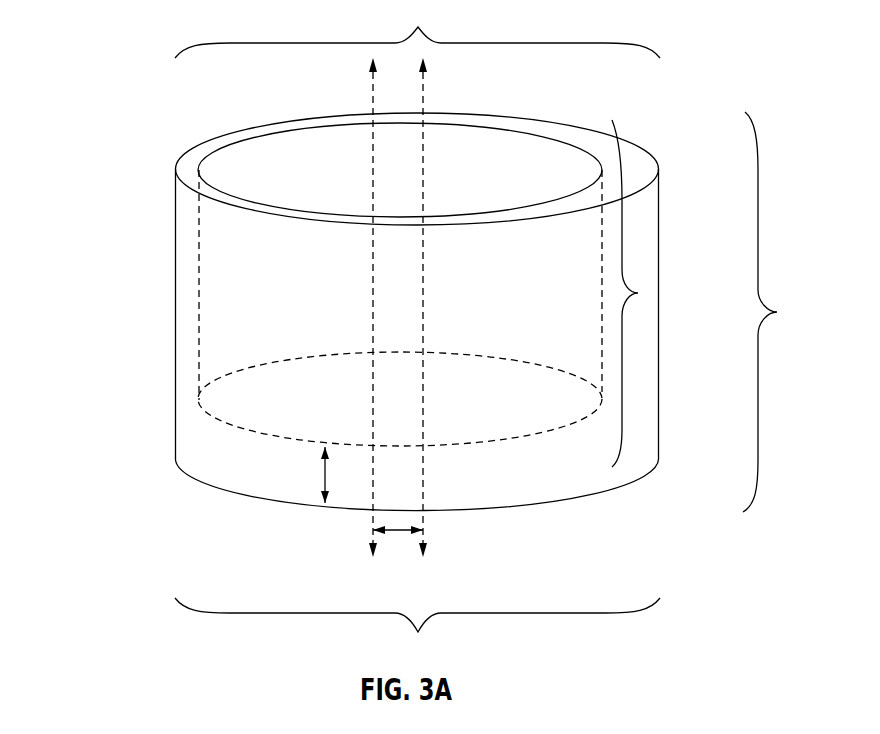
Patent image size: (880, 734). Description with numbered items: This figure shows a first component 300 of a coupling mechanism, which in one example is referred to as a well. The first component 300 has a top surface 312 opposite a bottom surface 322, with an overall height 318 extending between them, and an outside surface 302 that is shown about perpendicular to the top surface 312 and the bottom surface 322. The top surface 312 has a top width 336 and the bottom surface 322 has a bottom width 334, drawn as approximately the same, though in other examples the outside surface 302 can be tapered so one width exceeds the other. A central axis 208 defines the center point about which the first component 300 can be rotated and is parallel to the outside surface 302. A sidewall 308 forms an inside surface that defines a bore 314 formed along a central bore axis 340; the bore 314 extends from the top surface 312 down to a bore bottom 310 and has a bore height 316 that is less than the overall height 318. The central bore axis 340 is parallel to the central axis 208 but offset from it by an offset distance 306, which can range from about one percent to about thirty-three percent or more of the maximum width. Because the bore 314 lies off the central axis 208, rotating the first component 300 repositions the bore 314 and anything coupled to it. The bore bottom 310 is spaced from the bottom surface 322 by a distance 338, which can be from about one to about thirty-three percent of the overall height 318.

The first component 300 is at (120, 52).
The outside surface 302 is at (175, 312).
The offset distance 306 is at (398, 534).
The sidewall 308 is at (199, 285).
The bore bottom 310 is at (218, 421).
The top surface 312 is at (572, 133).
The bore 314 is at (344, 316).
The bore height 316 is at (638, 293).
The overall height 318 is at (784, 312).
The bottom surface 322 is at (560, 500).
The bottom width 334 is at (417, 632).
The top width 336 is at (417, 29).
The distance 338 is at (325, 469).
The central bore axis 340 is at (373, 90).
The central axis 208 is at (423, 90).